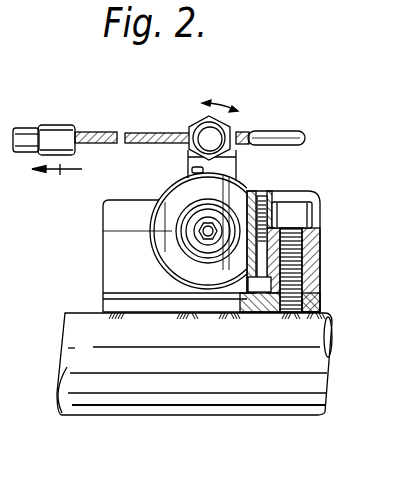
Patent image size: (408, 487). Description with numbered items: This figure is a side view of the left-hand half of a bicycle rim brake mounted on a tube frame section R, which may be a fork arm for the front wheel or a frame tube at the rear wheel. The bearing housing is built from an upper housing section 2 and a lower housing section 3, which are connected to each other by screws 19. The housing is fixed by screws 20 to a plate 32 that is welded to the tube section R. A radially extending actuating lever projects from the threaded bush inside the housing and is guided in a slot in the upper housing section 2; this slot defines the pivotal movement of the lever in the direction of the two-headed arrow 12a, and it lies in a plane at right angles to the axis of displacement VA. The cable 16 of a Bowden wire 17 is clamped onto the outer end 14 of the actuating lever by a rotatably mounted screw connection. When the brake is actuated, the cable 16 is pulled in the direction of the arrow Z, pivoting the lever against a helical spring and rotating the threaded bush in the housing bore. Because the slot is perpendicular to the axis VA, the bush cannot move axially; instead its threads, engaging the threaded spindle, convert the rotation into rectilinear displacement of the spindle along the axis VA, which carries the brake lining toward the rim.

The Bowden wire 17 is at (53, 133).
The cable 16 is at (112, 131).
The outer end of the actuating lever 14 is at (199, 118).
The two-headed arrow 12a is at (223, 105).
The axis of displacement VA is at (208, 231).
The upper housing section 2 is at (112, 220).
The lower housing section 3 is at (113, 260).
The screws 20 is at (289, 226).
The screws 19 is at (218, 290).
The plate 32 is at (310, 300).
The tube frame section R is at (158, 395).
The arrow Z is at (57, 185).